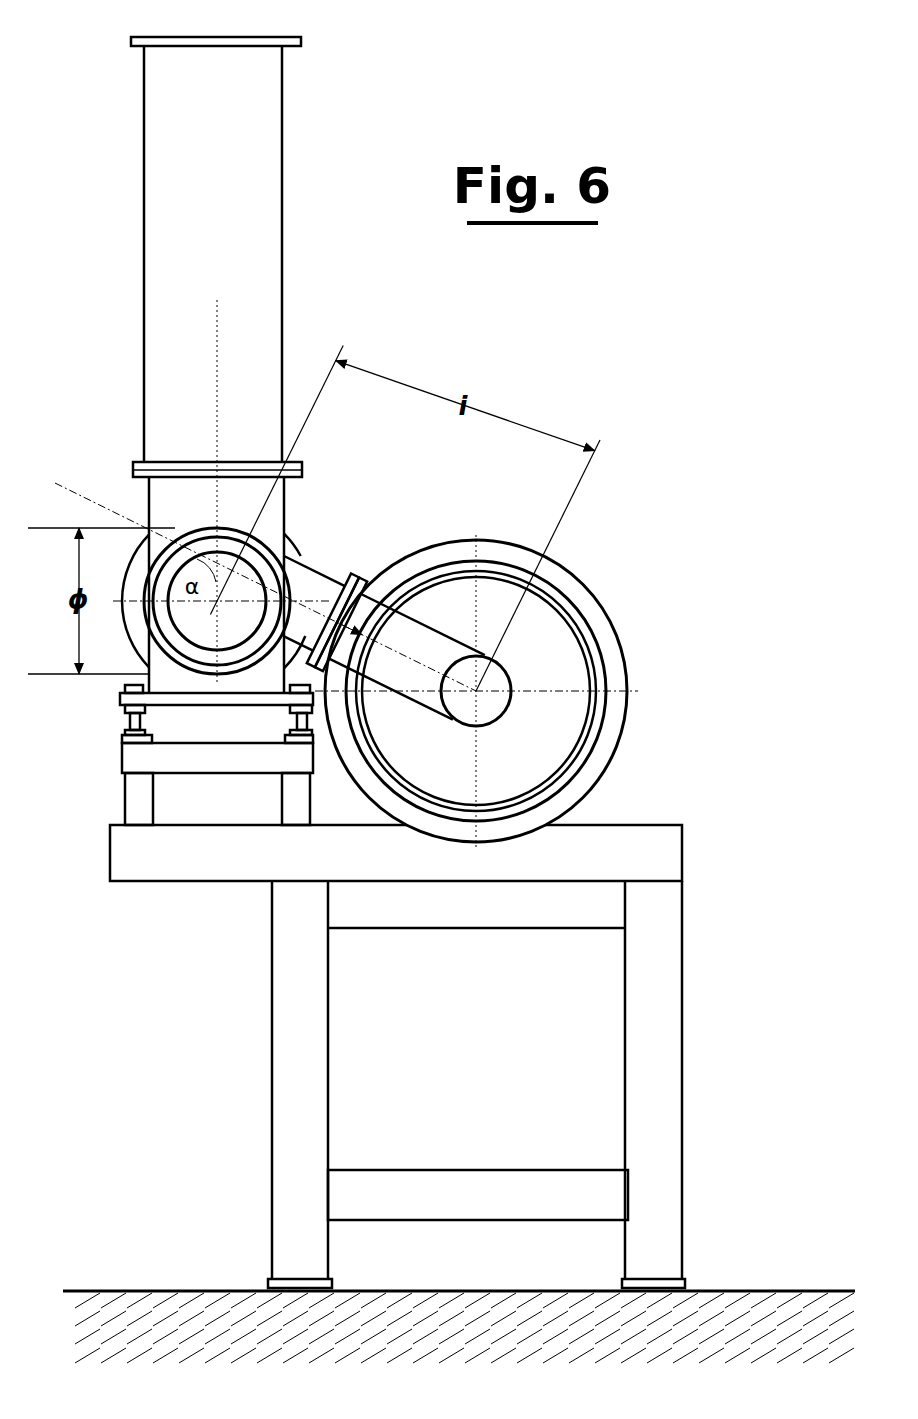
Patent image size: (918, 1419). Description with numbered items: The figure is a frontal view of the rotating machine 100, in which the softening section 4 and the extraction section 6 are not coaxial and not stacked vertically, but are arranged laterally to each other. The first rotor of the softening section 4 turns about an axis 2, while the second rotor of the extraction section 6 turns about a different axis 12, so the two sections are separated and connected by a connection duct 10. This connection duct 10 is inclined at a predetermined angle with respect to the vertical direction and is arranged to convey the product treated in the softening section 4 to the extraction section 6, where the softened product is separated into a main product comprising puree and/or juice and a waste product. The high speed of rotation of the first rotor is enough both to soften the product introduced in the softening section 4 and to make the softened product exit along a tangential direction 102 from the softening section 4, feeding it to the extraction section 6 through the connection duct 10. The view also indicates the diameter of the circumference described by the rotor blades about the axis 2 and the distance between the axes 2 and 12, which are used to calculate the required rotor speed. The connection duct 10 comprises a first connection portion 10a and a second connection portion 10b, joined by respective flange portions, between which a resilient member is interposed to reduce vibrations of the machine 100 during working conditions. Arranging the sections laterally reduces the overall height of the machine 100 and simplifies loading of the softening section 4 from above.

The axis of first rotor 2 is at (217, 601).
The softening section 4 is at (167, 522).
The extraction section 6 is at (605, 592).
The connection duct 10 is at (358, 557).
The first connection portion 10a is at (292, 573).
The second connection portion 10b is at (442, 622).
The axis of second rotor 12 is at (476, 691).
The machine 100 is at (115, 985).
The tangential direction 102 is at (317, 603).